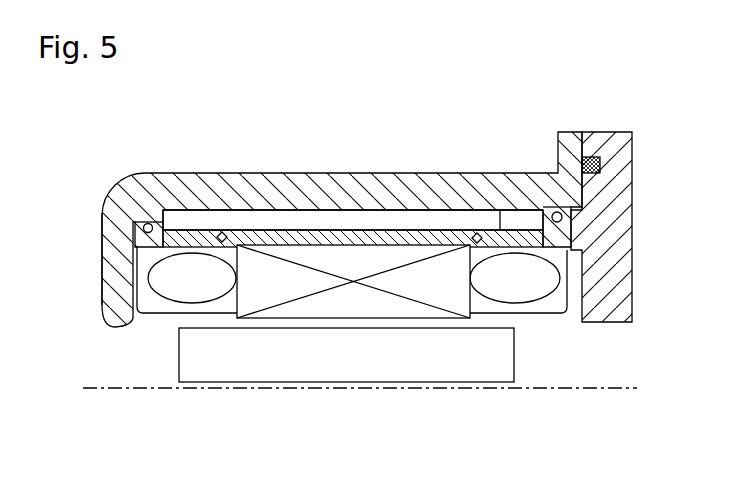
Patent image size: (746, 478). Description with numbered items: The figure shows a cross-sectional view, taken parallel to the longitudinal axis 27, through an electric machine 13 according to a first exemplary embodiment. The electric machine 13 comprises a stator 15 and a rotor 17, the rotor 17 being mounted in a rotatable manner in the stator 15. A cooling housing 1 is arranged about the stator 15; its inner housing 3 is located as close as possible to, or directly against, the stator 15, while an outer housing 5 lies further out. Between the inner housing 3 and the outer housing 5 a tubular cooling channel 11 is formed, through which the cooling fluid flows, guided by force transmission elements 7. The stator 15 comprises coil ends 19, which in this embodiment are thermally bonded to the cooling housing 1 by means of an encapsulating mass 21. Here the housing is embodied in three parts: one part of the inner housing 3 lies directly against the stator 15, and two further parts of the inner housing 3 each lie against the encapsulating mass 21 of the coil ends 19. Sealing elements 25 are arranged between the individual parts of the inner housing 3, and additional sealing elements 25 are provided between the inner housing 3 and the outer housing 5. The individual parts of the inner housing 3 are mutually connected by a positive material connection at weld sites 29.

The cooling housing 1 is at (387, 150).
The inner housing 3 is at (346, 225).
The outer housing 5 is at (225, 233).
The force transmission elements 7 is at (420, 225).
The cooling channel 11 is at (177, 222).
The electric machine 13 is at (85, 166).
The stator 15 is at (440, 293).
The rotor 17 is at (490, 363).
The coil ends 19 is at (172, 282).
The encapsulating mass 21 is at (148, 303).
The sealing elements 25 is at (148, 224).
The longitudinal axis 27 is at (112, 392).
The weld sites 29 is at (224, 235).